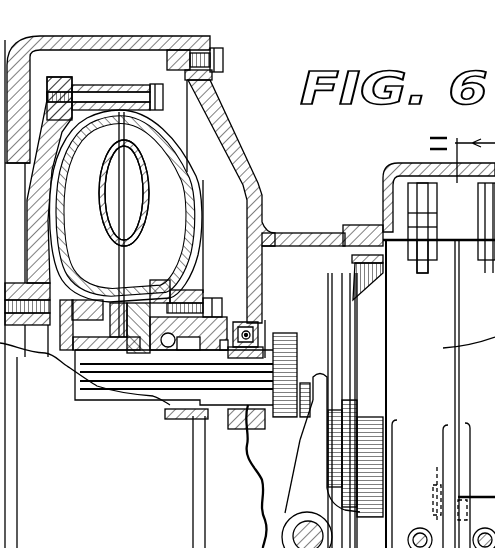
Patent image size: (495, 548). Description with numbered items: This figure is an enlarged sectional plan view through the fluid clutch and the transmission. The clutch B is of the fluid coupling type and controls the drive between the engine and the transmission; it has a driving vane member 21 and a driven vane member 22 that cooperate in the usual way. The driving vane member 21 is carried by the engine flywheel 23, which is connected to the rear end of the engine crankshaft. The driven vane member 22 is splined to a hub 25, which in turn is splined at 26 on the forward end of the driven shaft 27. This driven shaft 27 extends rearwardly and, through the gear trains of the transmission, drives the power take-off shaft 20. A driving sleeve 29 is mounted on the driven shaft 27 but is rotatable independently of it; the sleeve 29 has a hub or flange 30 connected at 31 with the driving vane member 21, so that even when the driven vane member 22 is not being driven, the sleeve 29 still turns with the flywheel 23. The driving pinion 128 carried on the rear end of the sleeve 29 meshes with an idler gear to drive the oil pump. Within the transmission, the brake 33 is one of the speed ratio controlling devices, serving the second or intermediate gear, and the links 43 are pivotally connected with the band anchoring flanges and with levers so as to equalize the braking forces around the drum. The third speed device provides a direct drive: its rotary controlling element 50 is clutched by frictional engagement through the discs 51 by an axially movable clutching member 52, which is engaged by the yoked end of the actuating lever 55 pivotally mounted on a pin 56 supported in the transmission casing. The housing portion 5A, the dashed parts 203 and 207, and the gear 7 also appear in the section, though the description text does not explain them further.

The clutch B is at (187, 129).
The driving vane member 21 is at (198, 184).
The driven vane member 22 is at (94, 306).
The engine flywheel 23 is at (65, 78).
The hub 25 is at (68, 368).
The spline 26 is at (96, 386).
The driven shaft 27 is at (160, 395).
The driving pinion 128 is at (275, 380).
The driving sleeve 29 is at (246, 430).
The hub or flange 30 is at (202, 280).
The connection 31 is at (206, 299).
The brake 33 is at (444, 256).
The links 43 is at (437, 214).
The rotary controlling element 50 is at (377, 256).
The discs 51 is at (326, 277).
The axially movable clutching member 52 is at (325, 302).
The housing 5A is at (327, 380).
The actuating lever 55 is at (295, 483).
The pin 56 is at (283, 535).
The gear 203 is at (437, 500).
The link 207 is at (434, 478).
The power take-off shaft 20 is at (476, 496).
The gear 7 is at (484, 522).